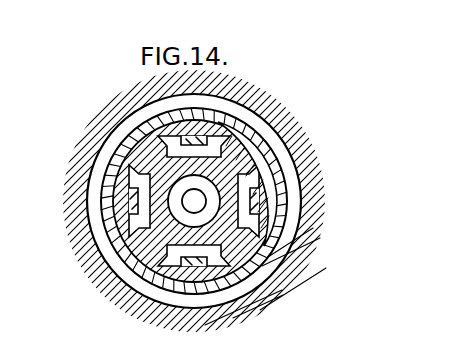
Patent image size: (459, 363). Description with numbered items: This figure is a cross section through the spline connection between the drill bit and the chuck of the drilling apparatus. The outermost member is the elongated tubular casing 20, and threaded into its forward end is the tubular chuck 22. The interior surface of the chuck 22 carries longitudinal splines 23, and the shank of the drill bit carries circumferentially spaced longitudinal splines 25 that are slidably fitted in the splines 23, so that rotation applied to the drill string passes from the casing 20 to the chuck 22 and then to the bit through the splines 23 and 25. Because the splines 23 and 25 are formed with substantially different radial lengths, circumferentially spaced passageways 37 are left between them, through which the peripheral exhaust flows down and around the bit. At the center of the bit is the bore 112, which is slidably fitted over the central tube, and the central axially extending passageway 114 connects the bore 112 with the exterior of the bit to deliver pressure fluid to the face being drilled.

The elongated tubular casing 20 is at (262, 158).
The tubular chuck 22 is at (176, 130).
The longitudinal splines 23 is at (140, 180).
The longitudinal splines 25 is at (263, 197).
The circumferentially spaced passageways 37 is at (170, 247).
The bore 112 is at (270, 262).
The central axially extending passageway 114 is at (186, 203).